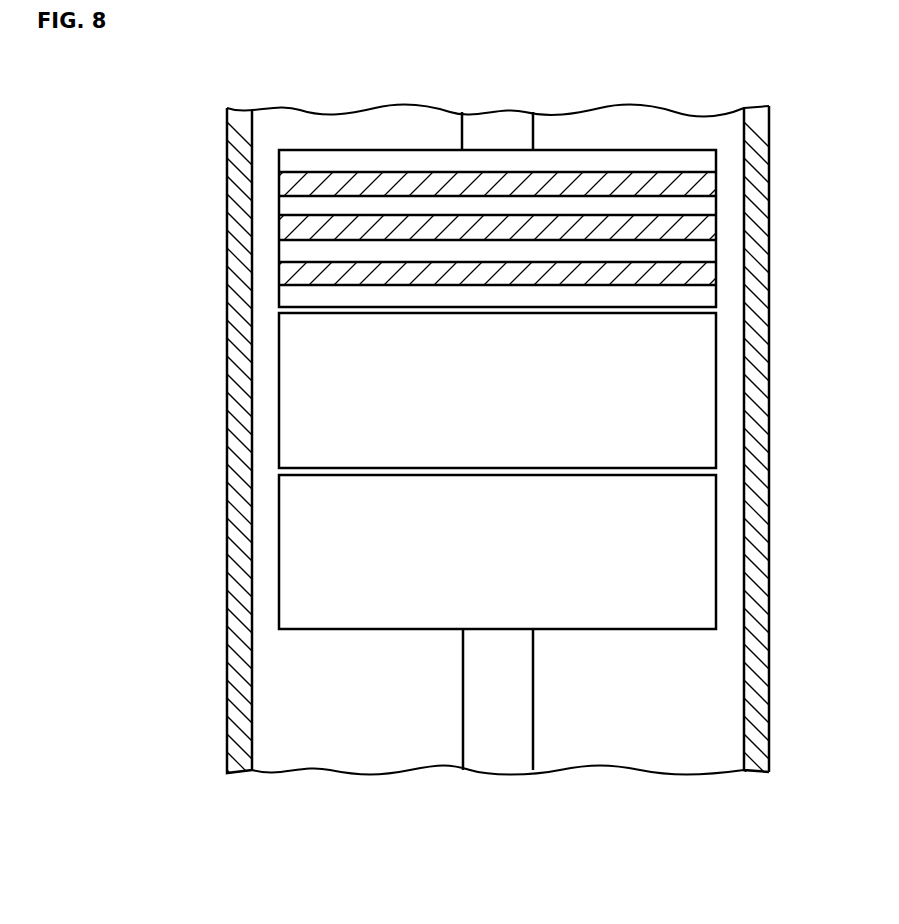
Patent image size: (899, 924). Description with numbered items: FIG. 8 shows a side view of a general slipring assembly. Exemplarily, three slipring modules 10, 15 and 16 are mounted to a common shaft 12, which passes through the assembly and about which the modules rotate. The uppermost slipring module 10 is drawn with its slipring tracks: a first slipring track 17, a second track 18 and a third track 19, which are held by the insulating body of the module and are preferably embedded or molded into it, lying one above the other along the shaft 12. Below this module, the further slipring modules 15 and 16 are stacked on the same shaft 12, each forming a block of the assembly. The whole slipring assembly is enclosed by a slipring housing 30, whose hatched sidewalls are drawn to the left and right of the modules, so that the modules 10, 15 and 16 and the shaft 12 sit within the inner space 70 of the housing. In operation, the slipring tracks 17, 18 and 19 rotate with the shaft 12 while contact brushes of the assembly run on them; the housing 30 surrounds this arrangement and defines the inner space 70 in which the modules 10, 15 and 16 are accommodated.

The slipring module 10 is at (500, 377).
The shaft 12 is at (478, 683).
The slipring module 15 is at (484, 391).
The slipring module 16 is at (484, 561).
The slipring track 17 is at (563, 180).
The second track 18 is at (612, 230).
The third track 19 is at (663, 275).
The slipring housing 30 is at (237, 755).
The inner space 70 is at (436, 803).